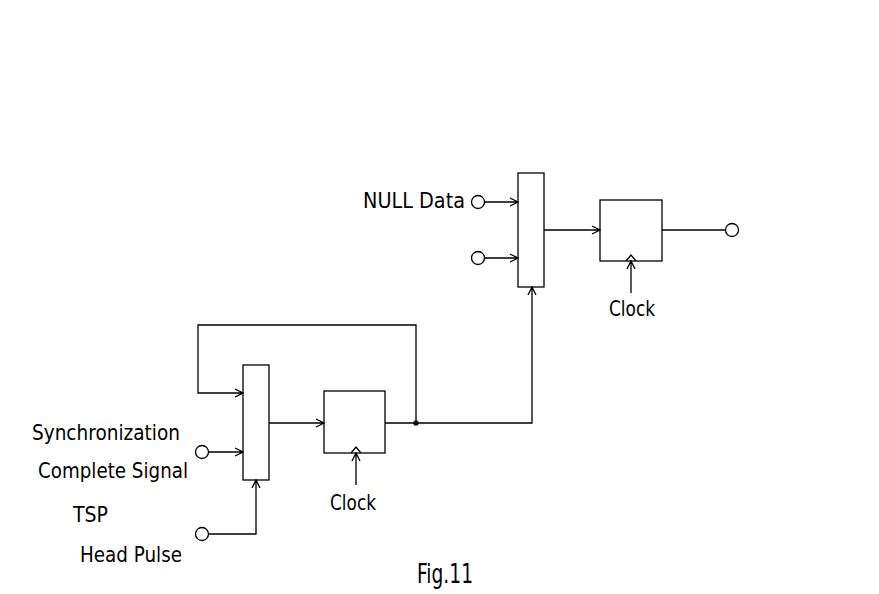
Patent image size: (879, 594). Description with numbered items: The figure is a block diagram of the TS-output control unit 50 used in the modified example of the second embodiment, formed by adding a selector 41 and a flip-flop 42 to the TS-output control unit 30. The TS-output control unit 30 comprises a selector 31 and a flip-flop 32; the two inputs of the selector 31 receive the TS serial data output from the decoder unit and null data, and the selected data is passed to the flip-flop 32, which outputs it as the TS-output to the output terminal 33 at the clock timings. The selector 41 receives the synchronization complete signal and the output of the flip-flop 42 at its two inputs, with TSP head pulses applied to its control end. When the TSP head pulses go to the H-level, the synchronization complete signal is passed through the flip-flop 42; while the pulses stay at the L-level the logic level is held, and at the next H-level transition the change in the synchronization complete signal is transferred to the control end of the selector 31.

The TS-output control unit 30 is at (579, 110).
The selector 31 is at (545, 188).
The flip-flop 32 is at (630, 200).
The output terminal 33 is at (732, 223).
The selector 41 is at (269, 382).
The flip-flop 42 is at (353, 391).
The TS-output control unit 50 is at (332, 216).